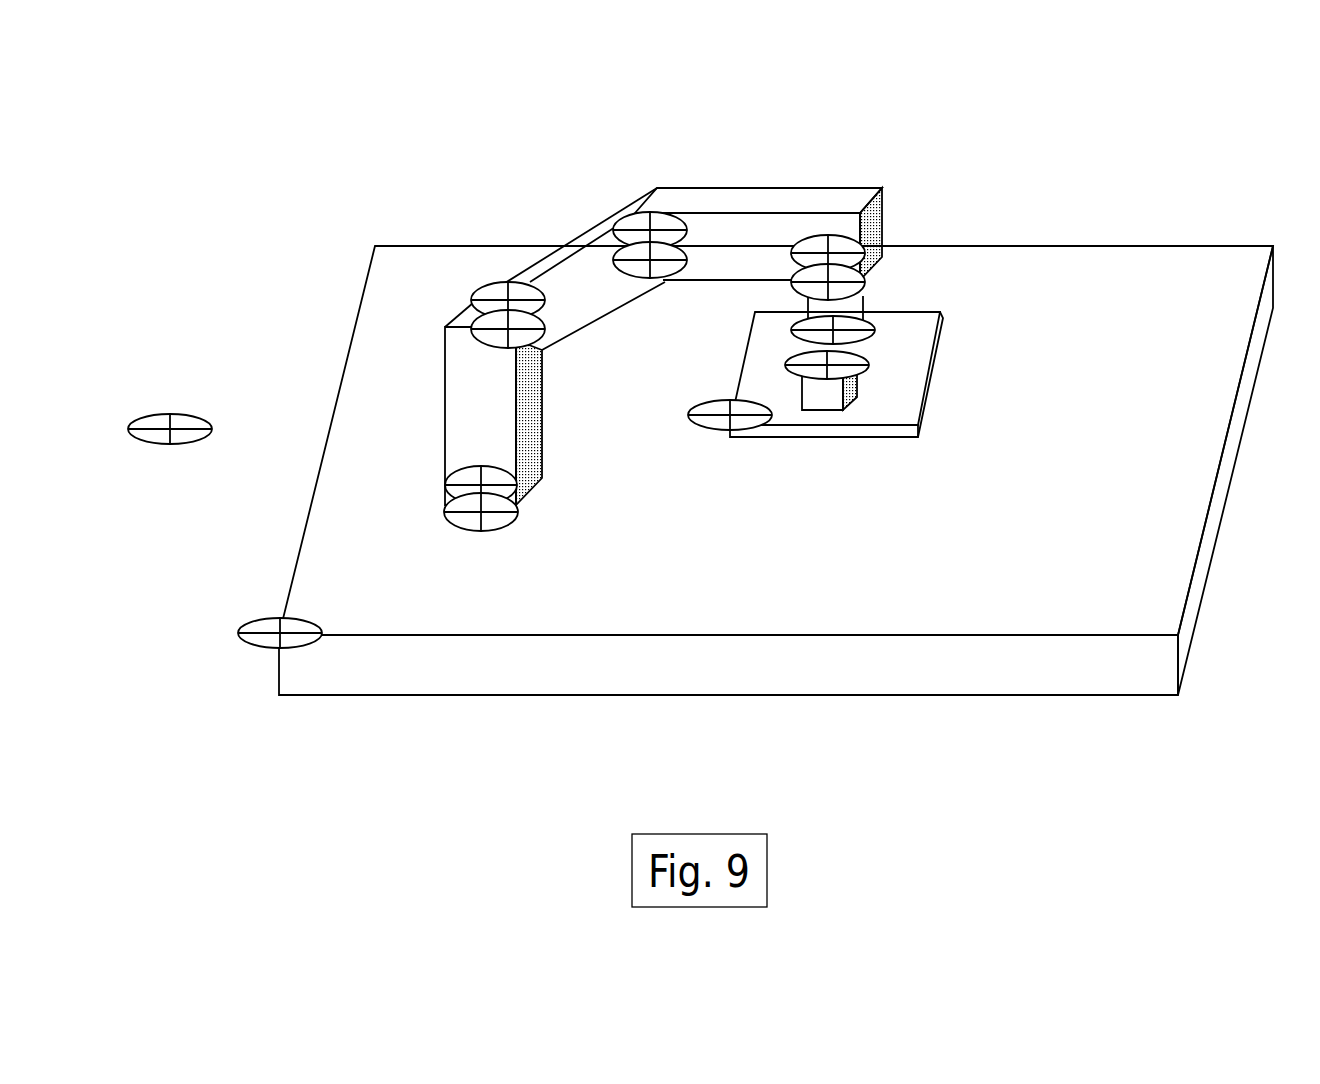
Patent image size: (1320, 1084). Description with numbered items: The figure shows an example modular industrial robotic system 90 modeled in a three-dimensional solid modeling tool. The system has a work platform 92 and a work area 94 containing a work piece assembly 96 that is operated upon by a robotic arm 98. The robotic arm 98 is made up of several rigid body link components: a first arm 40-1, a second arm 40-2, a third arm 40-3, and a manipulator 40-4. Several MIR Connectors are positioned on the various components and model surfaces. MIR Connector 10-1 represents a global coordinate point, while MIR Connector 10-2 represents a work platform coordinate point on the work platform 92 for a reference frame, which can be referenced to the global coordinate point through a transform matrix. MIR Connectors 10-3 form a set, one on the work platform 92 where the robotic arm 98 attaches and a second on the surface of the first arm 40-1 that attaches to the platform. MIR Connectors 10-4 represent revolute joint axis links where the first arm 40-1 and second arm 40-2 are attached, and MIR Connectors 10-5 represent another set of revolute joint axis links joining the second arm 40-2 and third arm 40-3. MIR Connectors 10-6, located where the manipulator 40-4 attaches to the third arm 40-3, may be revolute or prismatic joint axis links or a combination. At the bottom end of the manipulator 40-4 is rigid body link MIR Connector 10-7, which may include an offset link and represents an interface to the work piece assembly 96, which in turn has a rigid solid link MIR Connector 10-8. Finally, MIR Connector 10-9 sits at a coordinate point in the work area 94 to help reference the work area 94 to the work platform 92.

The MIR Connector 10-1 is at (170, 416).
The MIR Connector 10-2 is at (283, 618).
The MIR Connectors 10-3 is at (510, 527).
The MIR Connectors 10-4 is at (505, 280).
The MIR Connectors 10-5 is at (663, 212).
The MIR Connectors 10-6 is at (828, 253).
The MIR Connector 10-7 is at (780, 330).
The MIR Connector 10-8 is at (868, 360).
The MIR Connector 10-9 is at (722, 422).
The first arm 40-1 is at (445, 397).
The second arm 40-2 is at (578, 240).
The third arm 40-3 is at (803, 190).
The manipulator 40-4 is at (858, 312).
The modular industrial robotic system 90 is at (700, 396).
The work platform 92 is at (1085, 558).
The work area 94 is at (897, 350).
The work piece assembly 96 is at (860, 392).
The robotic arm 98 is at (676, 301).